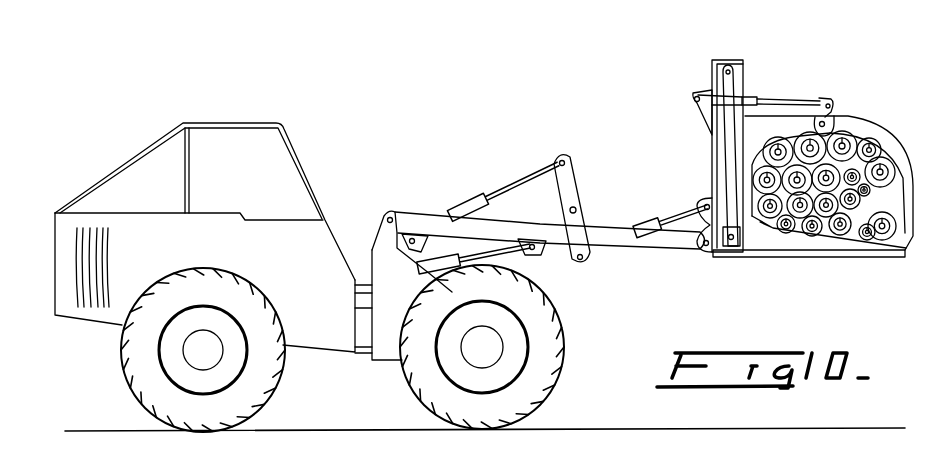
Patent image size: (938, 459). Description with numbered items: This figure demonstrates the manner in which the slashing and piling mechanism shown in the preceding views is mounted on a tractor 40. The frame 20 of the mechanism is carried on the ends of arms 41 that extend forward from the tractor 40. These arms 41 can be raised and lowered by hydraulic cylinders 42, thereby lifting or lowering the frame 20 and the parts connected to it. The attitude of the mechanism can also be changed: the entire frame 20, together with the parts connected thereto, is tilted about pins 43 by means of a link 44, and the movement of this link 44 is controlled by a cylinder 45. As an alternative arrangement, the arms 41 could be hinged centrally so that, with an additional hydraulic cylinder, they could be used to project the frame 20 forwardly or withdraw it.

The tractor 40 is at (112, 102).
The frame 20 is at (835, 50).
The arms 41 is at (607, 240).
The hydraulic cylinders 42 is at (437, 265).
The pins 43 is at (707, 247).
The link 44 is at (668, 222).
The cylinder 45 is at (507, 197).